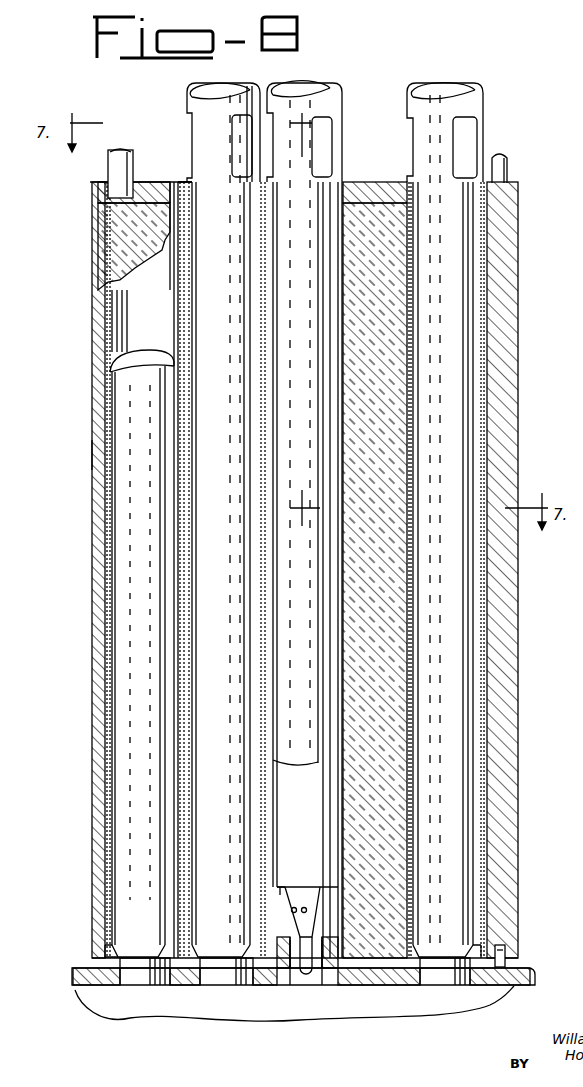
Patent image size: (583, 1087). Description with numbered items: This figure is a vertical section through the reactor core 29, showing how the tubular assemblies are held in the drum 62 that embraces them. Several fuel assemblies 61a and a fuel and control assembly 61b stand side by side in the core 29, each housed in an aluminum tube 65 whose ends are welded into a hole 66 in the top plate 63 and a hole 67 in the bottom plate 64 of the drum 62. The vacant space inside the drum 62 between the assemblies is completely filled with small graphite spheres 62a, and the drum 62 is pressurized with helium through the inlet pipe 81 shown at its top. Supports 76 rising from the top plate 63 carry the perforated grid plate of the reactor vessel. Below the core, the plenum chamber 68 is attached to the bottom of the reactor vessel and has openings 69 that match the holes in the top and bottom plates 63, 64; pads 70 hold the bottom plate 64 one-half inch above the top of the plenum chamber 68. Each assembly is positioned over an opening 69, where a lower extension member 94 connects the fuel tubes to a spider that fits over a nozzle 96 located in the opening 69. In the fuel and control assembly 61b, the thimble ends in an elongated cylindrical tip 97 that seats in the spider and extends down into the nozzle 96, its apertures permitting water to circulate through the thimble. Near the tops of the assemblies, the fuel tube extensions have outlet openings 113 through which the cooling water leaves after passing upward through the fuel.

The reactor core 29 is at (88, 455).
The fuel assembly 61a is at (160, 600).
The fuel and control assembly 61b is at (322, 600).
The drum 62 is at (518, 322).
The graphite spheres 62a is at (112, 238).
The top plate 63 is at (93, 196).
The bottom plate 64 is at (516, 940).
The aluminum tube 65 is at (183, 303).
The hole in top plate 66 is at (182, 182).
The hole in bottom plate 67 is at (110, 945).
The plenum chamber 68 is at (226, 1010).
The opening in plenum chamber 69 is at (120, 988).
The pad 70 is at (508, 958).
The support 76 is at (112, 167).
The helium inlet pipe 81 is at (505, 170).
The lower extension member 94 is at (280, 884).
The nozzle 96 is at (292, 985).
The cylindrical tip 97 is at (300, 897).
The outlet opening 113 is at (240, 140).